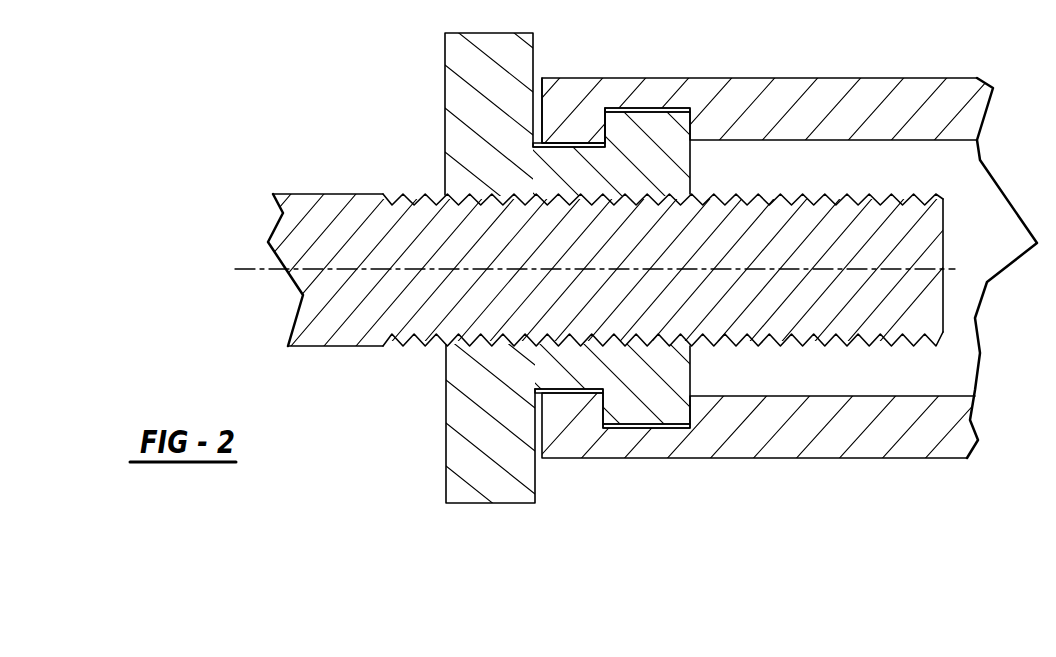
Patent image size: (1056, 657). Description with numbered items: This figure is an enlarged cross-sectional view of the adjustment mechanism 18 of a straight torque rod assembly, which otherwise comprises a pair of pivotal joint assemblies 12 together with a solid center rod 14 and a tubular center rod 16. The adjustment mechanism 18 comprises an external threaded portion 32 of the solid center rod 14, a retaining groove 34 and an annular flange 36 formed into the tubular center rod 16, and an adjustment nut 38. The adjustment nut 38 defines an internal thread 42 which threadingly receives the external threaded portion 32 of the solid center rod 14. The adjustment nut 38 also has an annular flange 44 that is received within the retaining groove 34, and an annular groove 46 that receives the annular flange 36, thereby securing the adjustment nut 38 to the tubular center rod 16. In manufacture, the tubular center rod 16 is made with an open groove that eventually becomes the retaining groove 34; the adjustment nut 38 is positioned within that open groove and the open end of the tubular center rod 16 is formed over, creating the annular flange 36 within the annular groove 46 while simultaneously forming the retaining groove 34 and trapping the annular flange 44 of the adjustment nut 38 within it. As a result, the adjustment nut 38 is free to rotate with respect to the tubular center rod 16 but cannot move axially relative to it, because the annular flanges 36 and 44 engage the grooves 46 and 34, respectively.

The pivotal joint assembly 12 is at (73, 0).
The solid center rod 14 is at (320, 338).
The tubular center rod 16 is at (835, 432).
The adjustment mechanism 18 is at (393, 58).
The external threaded portion 32 is at (863, 313).
The retaining groove 34 is at (640, 112).
The annular flange 36 is at (578, 125).
The adjustment nut 38 is at (503, 490).
The internal thread 42 is at (533, 330).
The annular flange 44 is at (633, 405).
The annular groove 46 is at (570, 393).